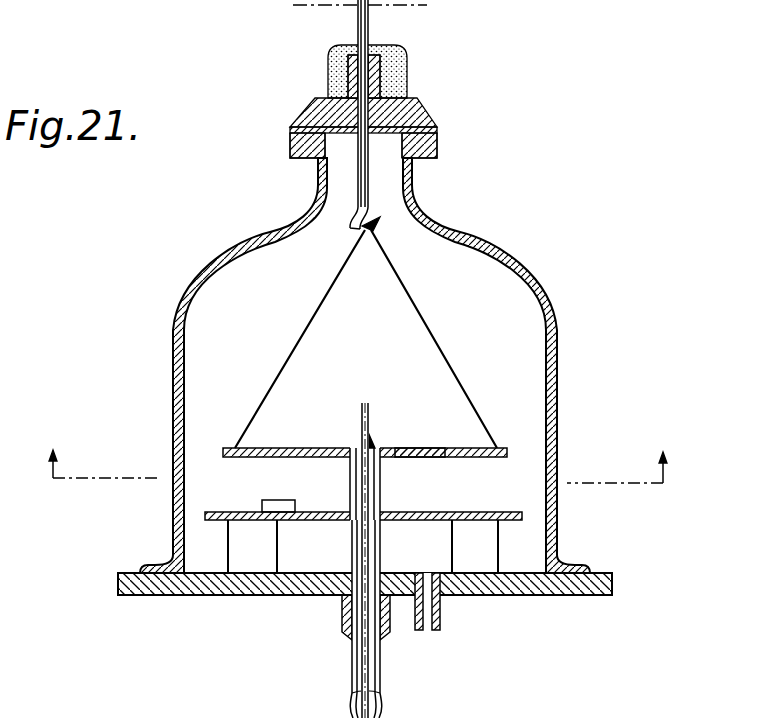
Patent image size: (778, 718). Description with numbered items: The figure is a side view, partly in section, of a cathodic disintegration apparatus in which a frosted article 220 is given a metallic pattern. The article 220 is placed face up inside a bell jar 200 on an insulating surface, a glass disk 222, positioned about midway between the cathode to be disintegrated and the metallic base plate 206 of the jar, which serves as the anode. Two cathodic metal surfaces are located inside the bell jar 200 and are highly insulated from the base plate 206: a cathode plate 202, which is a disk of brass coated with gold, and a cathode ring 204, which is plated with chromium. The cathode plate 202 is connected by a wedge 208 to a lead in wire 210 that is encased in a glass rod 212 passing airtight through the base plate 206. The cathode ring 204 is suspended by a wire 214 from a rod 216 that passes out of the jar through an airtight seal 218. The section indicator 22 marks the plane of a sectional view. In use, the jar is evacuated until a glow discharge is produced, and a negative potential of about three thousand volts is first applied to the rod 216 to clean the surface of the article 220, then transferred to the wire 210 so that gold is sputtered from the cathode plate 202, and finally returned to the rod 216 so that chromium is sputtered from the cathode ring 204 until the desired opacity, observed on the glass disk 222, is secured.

The bell jar 200 is at (520, 248).
The cathode plate 202 is at (422, 439).
The cathode ring 204 is at (257, 448).
The base plate 206 is at (612, 580).
The wedge 208 is at (372, 440).
The lead in wire 210 is at (360, 411).
The glass rod 212 is at (353, 552).
The wire 214 is at (445, 358).
The rod 216 is at (368, 23).
The airtight seal 218 is at (407, 67).
The article 220 is at (278, 505).
The glass disk 222 is at (417, 510).
The section line 22- 22 is at (355, 479).